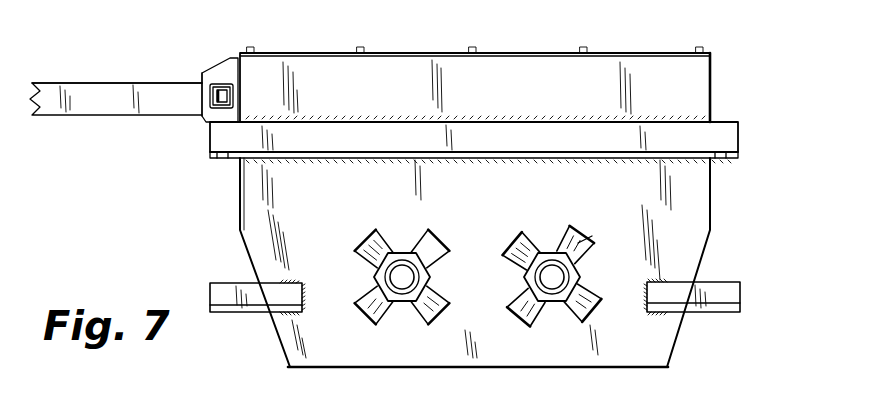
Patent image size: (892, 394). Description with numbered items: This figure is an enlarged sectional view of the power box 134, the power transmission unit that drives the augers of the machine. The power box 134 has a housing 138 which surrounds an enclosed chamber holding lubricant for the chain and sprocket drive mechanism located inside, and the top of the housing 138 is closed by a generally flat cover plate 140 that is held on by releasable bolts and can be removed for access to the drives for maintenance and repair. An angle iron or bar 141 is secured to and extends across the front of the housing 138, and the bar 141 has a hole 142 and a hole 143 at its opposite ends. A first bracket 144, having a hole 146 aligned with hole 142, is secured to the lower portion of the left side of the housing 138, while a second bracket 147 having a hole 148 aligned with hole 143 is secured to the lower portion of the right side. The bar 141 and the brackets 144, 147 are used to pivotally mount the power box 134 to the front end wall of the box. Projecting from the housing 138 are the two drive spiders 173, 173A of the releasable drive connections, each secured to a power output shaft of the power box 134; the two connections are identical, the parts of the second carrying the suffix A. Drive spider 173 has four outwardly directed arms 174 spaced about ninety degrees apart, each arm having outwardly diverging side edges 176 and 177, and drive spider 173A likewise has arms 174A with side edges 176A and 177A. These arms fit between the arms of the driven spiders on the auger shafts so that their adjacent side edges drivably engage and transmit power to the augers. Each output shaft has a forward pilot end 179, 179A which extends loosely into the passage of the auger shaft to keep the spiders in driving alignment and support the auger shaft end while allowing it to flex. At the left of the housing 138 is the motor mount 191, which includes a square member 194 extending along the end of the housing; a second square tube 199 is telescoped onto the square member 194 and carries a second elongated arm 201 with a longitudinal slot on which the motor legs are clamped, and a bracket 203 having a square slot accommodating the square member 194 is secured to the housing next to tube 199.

The power box 134 is at (734, 66).
The housing 138 is at (700, 210).
The cover plate 140 is at (523, 52).
The bar 141 is at (726, 131).
The hole 142 is at (222, 162).
The hole 143 is at (727, 156).
The first bracket 144 is at (220, 283).
The hole 146 is at (225, 312).
The second bracket 147 is at (725, 290).
The hole 148 is at (722, 311).
The drive spider 173 is at (588, 234).
The drive spider 173A is at (370, 240).
The arms 174 is at (584, 251).
The arms 174A is at (446, 246).
The side edge 176 is at (562, 242).
The side edge 176A is at (416, 246).
The side edge 177 is at (578, 262).
The side edge 177A is at (434, 262).
The pilot end 179 is at (552, 285).
The pilot end 179A is at (402, 285).
The motor mount 191 is at (108, 81).
The square member 194 is at (213, 98).
The second square tube 199 is at (202, 110).
The second elongated arm 201 is at (108, 107).
The bracket 203 is at (220, 73).